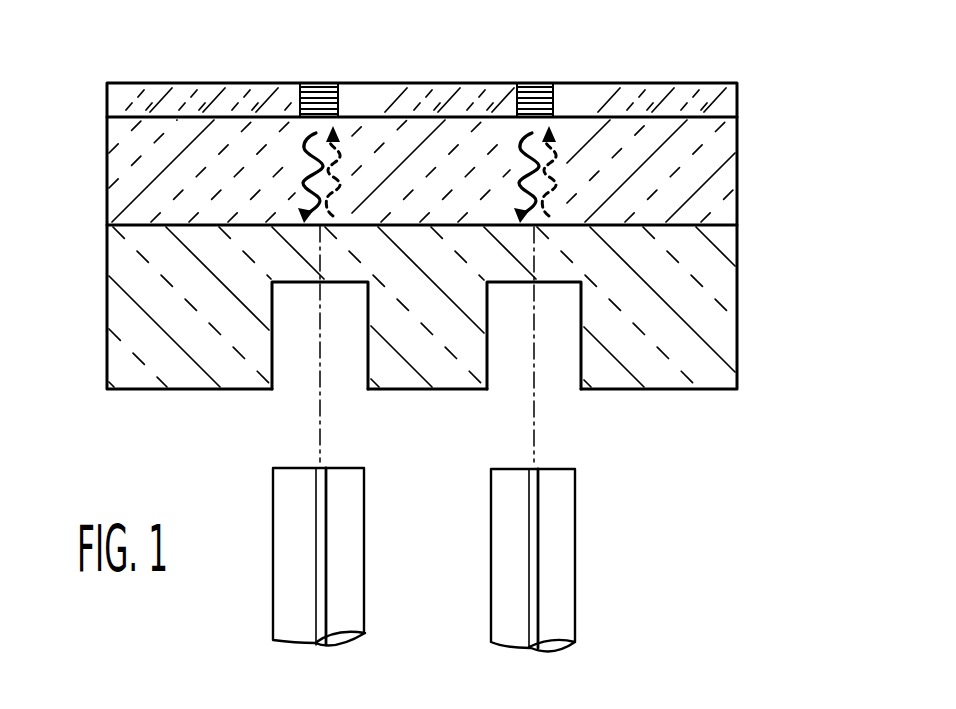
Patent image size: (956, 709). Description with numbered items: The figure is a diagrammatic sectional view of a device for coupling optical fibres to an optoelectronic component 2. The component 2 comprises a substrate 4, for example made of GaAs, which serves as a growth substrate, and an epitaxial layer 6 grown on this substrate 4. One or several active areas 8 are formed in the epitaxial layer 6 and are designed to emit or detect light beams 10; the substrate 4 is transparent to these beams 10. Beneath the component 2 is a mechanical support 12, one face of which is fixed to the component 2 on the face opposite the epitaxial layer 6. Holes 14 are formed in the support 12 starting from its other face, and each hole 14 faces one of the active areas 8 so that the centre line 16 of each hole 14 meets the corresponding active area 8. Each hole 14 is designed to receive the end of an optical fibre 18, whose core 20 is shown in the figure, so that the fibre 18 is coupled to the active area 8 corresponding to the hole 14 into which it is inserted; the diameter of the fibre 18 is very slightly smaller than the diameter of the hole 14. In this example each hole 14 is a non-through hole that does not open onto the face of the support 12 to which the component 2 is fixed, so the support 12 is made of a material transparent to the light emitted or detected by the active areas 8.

The optoelectronic component 2 is at (201, 66).
The substrate 4 is at (723, 190).
The epitaxial layer 6 is at (727, 100).
The active areas 8 is at (329, 88).
The light beams 10 is at (296, 165).
The support 12 is at (722, 293).
The holes 14 is at (487, 358).
The centre line 16 is at (318, 373).
The optical fibre 18 is at (461, 568).
The core 20 is at (322, 545).